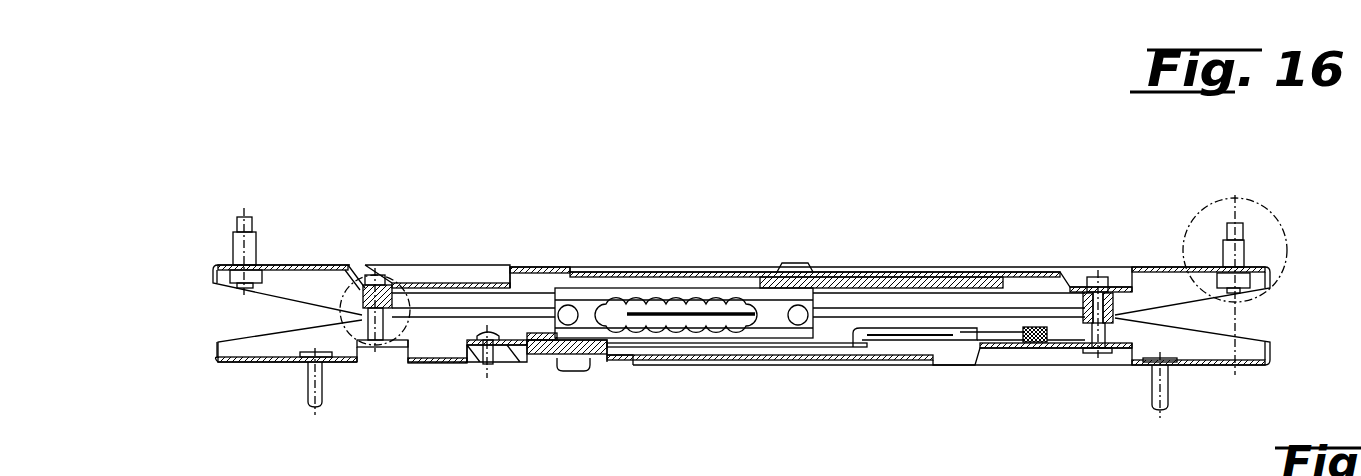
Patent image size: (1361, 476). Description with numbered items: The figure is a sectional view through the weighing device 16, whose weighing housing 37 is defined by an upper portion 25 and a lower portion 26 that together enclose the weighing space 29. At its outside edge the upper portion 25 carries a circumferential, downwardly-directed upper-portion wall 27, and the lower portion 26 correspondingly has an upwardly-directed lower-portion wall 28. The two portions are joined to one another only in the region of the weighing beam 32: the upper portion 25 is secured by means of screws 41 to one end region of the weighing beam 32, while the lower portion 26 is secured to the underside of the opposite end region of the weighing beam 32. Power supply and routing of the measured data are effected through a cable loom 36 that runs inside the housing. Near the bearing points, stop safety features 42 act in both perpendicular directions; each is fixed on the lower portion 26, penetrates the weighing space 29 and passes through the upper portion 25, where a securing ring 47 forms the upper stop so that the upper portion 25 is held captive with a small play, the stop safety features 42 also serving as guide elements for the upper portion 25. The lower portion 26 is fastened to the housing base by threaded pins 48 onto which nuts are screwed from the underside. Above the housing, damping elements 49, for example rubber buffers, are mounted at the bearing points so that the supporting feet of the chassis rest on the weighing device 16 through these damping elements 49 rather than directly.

The weighing device 16 is at (1028, 256).
The upper portion 25 is at (335, 267).
The lower portion 26 is at (279, 362).
The upper-portion wall 27 is at (533, 282).
The lower-portion wall 28 is at (447, 347).
The weighing space 29 is at (907, 302).
The weighing beam 32 is at (688, 292).
The cable loom 36 is at (995, 330).
The weighing housing 37 is at (212, 345).
The screws 41 is at (800, 265).
The stop safety features 42 is at (402, 270).
The securing ring 47 is at (488, 397).
The pins 48 is at (322, 383).
The damping elements 49 is at (237, 250).